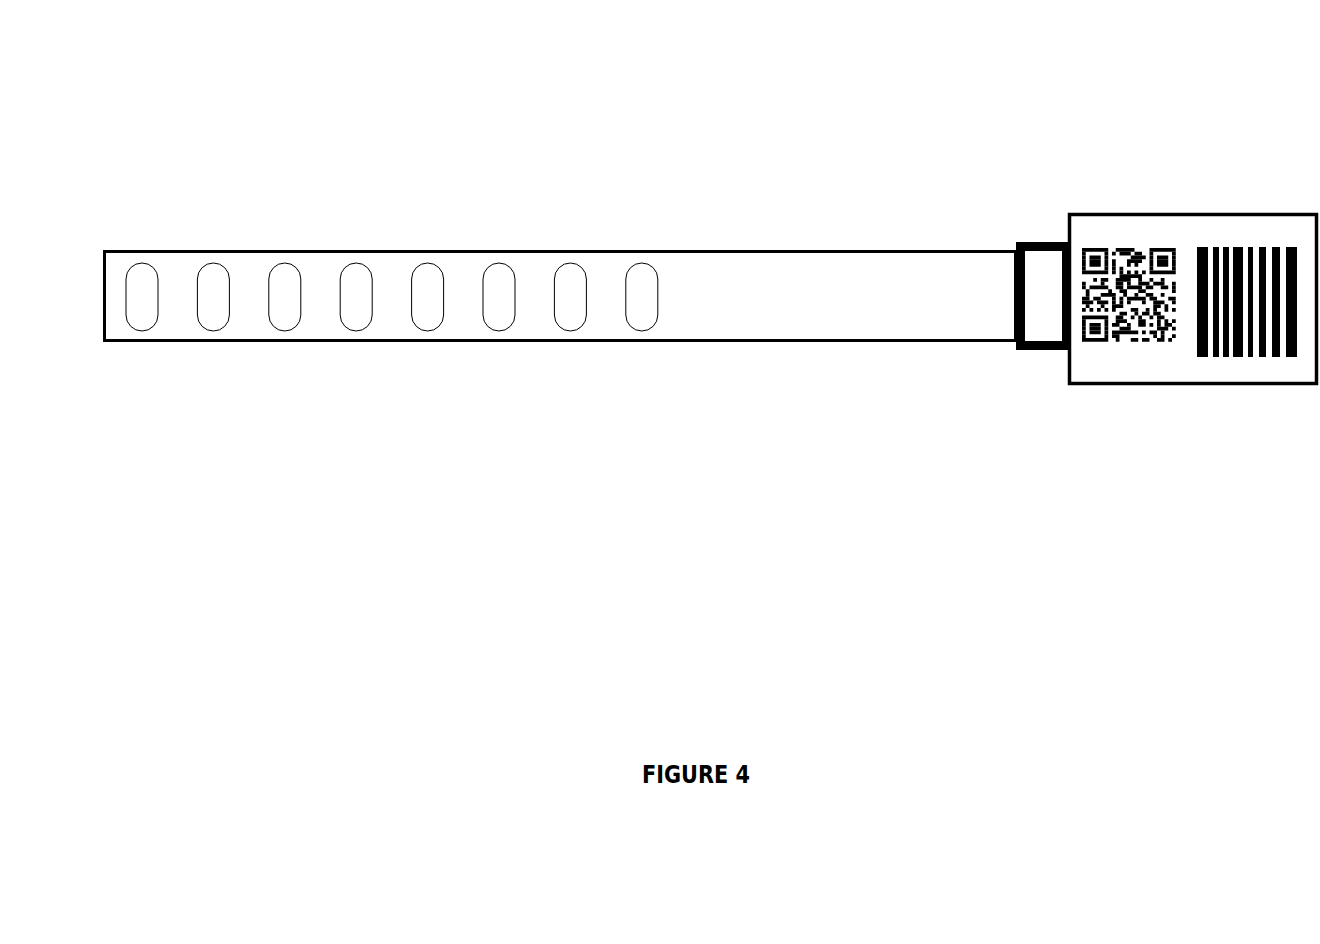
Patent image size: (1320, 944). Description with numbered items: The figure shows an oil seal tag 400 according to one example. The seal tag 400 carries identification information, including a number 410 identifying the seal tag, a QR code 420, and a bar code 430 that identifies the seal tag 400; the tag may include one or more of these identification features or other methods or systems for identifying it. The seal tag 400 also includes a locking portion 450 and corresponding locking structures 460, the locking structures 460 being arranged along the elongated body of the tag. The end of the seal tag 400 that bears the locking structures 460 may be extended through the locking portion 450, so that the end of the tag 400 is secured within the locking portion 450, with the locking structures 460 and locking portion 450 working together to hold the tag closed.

The seal tag 400 is at (213, 127).
The number 410 is at (1066, 404).
The QR code 420 is at (1102, 240).
The bar code 430 is at (1243, 370).
The locking portion 450 is at (1012, 243).
The locking structures 460 is at (620, 257).